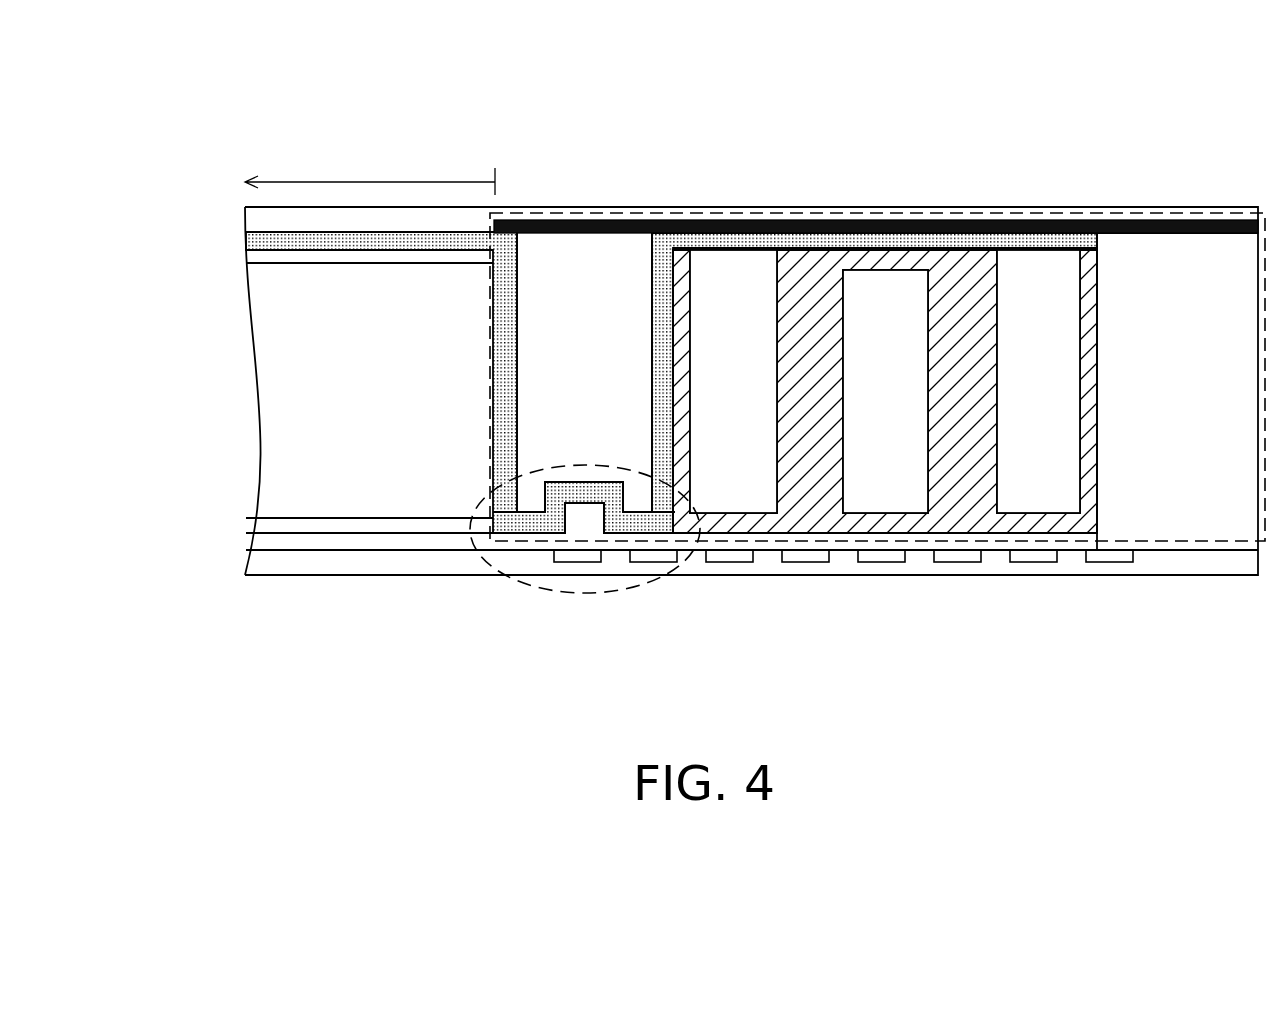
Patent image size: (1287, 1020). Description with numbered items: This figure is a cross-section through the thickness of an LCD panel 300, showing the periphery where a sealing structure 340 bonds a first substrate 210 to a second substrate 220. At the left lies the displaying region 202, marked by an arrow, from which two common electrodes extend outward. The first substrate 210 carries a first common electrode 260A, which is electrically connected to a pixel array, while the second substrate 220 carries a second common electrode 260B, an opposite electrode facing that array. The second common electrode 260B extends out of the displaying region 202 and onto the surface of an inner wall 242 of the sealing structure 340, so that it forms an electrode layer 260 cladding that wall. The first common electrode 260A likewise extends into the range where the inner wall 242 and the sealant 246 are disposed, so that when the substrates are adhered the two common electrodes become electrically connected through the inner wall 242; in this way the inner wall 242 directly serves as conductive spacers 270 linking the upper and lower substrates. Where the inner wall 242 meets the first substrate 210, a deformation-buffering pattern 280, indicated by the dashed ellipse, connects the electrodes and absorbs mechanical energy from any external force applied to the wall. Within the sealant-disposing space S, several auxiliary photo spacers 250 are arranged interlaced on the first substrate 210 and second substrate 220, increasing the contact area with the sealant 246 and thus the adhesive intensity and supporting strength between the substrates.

The LCD panel 300 is at (1272, 698).
The first substrate 210 is at (1172, 567).
The second substrate 220 is at (253, 219).
The first common electrode 260A is at (260, 540).
The second common electrode 260B is at (248, 240).
The electrode layer 260 is at (523, 515).
The sealant 246 is at (808, 282).
The auxiliary photo spacers 250 is at (727, 283).
The inner wall 242 is at (588, 275).
The conductive spacers 270 is at (584, 372).
The sealing structure 340 is at (1242, 213).
The deformation-buffering pattern 280 is at (629, 590).
The displaying region 202 is at (370, 169).
The sealant-disposing space S is at (960, 478).